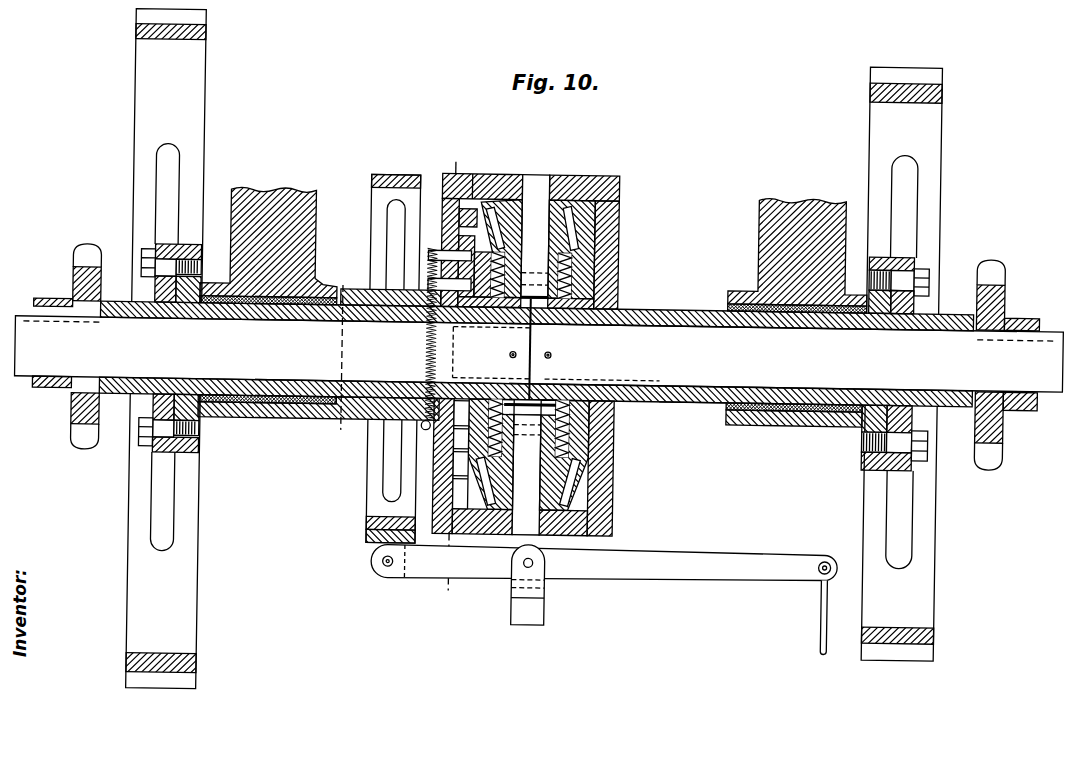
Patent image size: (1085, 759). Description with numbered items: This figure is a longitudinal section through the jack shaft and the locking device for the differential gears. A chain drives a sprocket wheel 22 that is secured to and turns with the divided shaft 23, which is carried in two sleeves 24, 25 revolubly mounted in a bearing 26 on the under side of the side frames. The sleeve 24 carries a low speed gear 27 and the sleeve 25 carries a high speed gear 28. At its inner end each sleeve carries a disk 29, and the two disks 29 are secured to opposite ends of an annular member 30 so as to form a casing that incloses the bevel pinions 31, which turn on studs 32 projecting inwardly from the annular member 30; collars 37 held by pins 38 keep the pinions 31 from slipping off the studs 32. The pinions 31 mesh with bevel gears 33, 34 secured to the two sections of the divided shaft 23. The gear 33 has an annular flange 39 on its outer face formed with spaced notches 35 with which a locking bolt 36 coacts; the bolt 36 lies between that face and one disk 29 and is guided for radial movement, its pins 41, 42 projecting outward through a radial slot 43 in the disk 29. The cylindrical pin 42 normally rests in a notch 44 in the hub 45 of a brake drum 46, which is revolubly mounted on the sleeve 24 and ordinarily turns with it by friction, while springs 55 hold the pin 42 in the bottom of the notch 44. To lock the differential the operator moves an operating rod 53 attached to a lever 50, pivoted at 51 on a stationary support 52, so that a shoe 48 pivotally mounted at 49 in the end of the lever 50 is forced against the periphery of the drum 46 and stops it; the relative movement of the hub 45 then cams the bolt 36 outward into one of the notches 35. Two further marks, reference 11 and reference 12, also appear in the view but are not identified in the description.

The shaft 11 is at (366, 222).
The axis line 12 is at (404, 381).
The sprocket wheel 22 is at (86, 256).
The divided shaft 23 is at (675, 341).
The sleeve 24 is at (231, 425).
The sleeve 25 is at (698, 398).
The bearing 26 is at (309, 410).
The low speed gear 27 is at (203, 70).
The high speed gear 28 is at (867, 104).
The disk 29 is at (438, 180).
The annular member 30 is at (572, 178).
The bevel pinions 31 is at (505, 200).
The studs 32 is at (537, 196).
The bevel gear 33 is at (486, 205).
The bevel gear 34 is at (597, 235).
The spaced notches 35 is at (460, 215).
The locking bolt 36 is at (468, 240).
The collars 37 is at (594, 291).
The pins 38 is at (600, 272).
The annular flange 39 is at (470, 177).
The pin 41 is at (428, 257).
The pin 42 is at (428, 286).
The radial slot 43 is at (445, 328).
The notch 44 is at (420, 303).
The hub 45 is at (344, 421).
The brake drum 46 is at (382, 179).
The shoe 48 is at (372, 545).
The pivot 49 is at (389, 570).
The lever 50 is at (673, 557).
The pivot 51 is at (530, 567).
The stationary support 52 is at (548, 613).
The operating rod 53 is at (825, 619).
The springs 55 is at (420, 364).